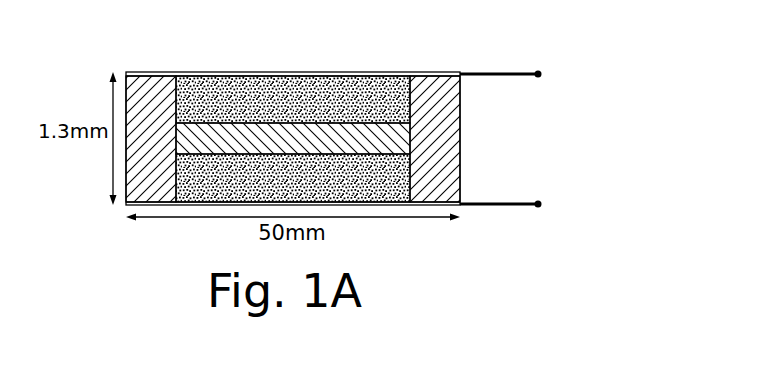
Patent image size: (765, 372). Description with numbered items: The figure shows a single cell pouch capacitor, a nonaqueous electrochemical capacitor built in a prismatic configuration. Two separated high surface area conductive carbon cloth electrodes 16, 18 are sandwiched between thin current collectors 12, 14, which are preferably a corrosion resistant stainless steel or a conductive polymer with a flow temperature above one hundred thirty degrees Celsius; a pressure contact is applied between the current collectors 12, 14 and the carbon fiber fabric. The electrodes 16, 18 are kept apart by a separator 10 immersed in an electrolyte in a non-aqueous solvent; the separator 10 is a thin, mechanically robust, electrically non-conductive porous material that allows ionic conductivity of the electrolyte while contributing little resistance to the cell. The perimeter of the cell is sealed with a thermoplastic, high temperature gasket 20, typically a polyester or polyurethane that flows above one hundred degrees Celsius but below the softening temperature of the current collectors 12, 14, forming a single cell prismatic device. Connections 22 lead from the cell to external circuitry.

The separator 10 is at (400, 145).
The current collector 12 is at (402, 72).
The current collector 14 is at (402, 206).
The carbon cloth electrode 16 is at (205, 96).
The carbon cloth electrode 18 is at (230, 183).
The gasket 20 is at (462, 111).
The connections 22 is at (531, 70).